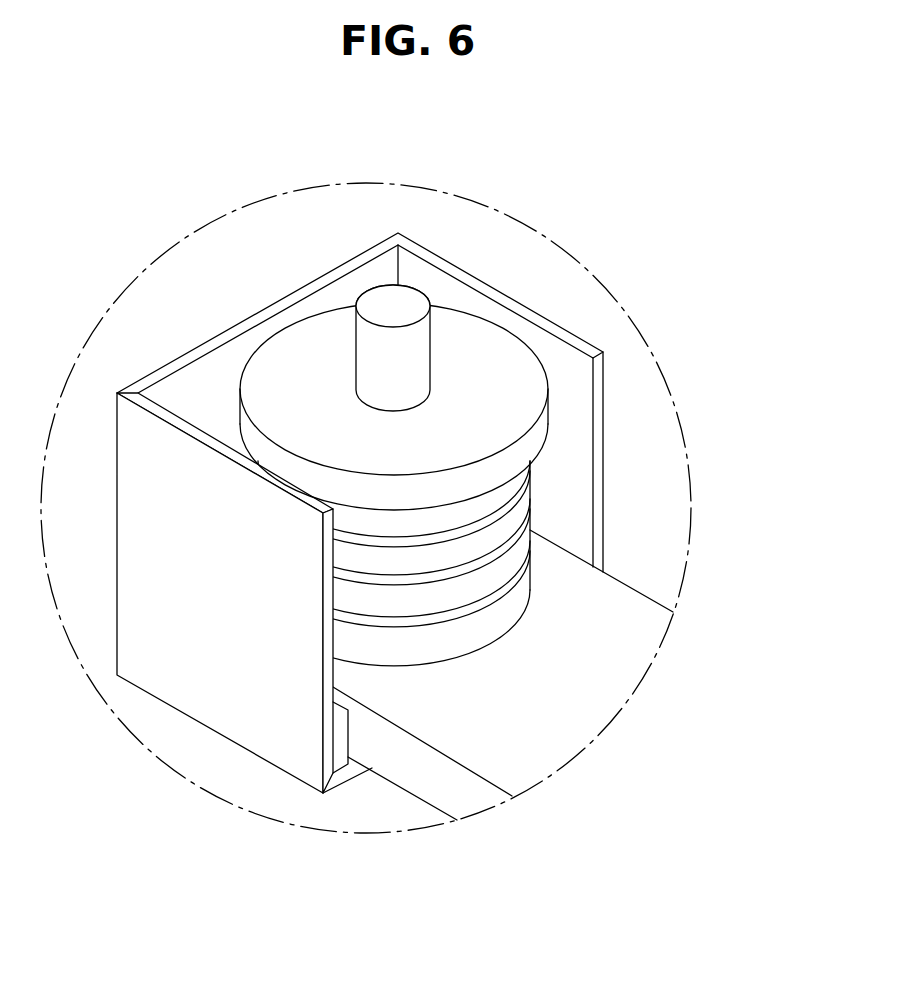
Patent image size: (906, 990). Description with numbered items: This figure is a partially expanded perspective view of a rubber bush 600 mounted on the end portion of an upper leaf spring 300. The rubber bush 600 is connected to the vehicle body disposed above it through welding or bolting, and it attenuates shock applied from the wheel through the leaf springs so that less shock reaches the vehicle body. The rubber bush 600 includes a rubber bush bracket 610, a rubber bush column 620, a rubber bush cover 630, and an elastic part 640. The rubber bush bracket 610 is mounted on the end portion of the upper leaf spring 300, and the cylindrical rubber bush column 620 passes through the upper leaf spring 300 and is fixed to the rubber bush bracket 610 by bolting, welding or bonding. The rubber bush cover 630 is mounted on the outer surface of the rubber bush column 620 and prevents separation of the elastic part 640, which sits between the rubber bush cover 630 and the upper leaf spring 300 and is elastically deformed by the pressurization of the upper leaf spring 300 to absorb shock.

The rubber bush 600 is at (708, 207).
The rubber bush bracket 610 is at (340, 752).
The rubber bush column 620 is at (397, 305).
The rubber bush cover 630 is at (483, 367).
The elastic part 640 is at (487, 537).
The upper leaf spring 300 is at (572, 693).